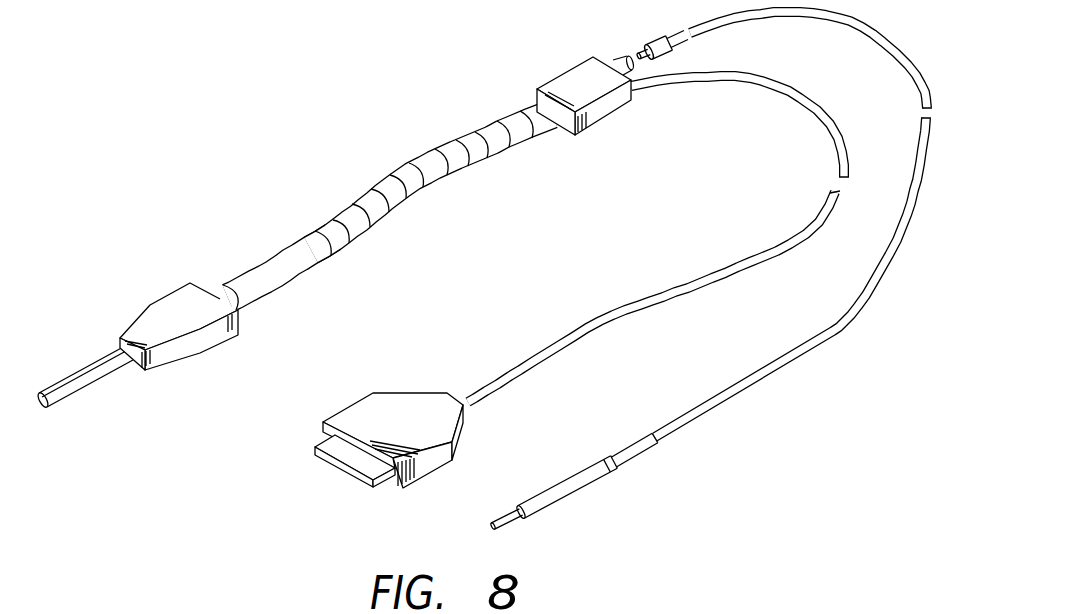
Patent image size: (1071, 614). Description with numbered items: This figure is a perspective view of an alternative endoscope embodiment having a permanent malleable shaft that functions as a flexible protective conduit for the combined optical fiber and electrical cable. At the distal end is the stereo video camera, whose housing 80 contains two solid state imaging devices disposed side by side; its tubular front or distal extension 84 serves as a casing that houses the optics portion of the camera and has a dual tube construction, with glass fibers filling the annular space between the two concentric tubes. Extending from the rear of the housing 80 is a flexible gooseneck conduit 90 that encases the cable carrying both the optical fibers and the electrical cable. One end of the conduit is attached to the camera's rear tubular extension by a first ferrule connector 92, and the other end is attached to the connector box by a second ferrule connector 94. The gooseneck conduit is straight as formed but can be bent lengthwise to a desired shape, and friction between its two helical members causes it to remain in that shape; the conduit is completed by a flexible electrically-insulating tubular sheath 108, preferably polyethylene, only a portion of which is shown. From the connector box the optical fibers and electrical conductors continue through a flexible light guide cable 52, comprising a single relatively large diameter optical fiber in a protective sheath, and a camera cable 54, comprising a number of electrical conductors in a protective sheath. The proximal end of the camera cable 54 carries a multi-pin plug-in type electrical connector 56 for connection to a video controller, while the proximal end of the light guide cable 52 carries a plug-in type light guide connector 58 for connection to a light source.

The flexible light guide cable 52 is at (880, 42).
The camera cable 54 is at (767, 257).
The multi-pin plug-in type electrical connector 56 is at (362, 400).
The plug-in type light guide connector 58 is at (500, 519).
The housing 80 is at (157, 288).
The tubular front or distal extension 84 is at (98, 377).
The flexible gooseneck conduit 90 is at (417, 157).
The first ferrule connector 92 is at (216, 285).
The second ferrule connector 94 is at (532, 108).
The flexible electrically-insulating tubular covering or sheath 108 is at (288, 253).